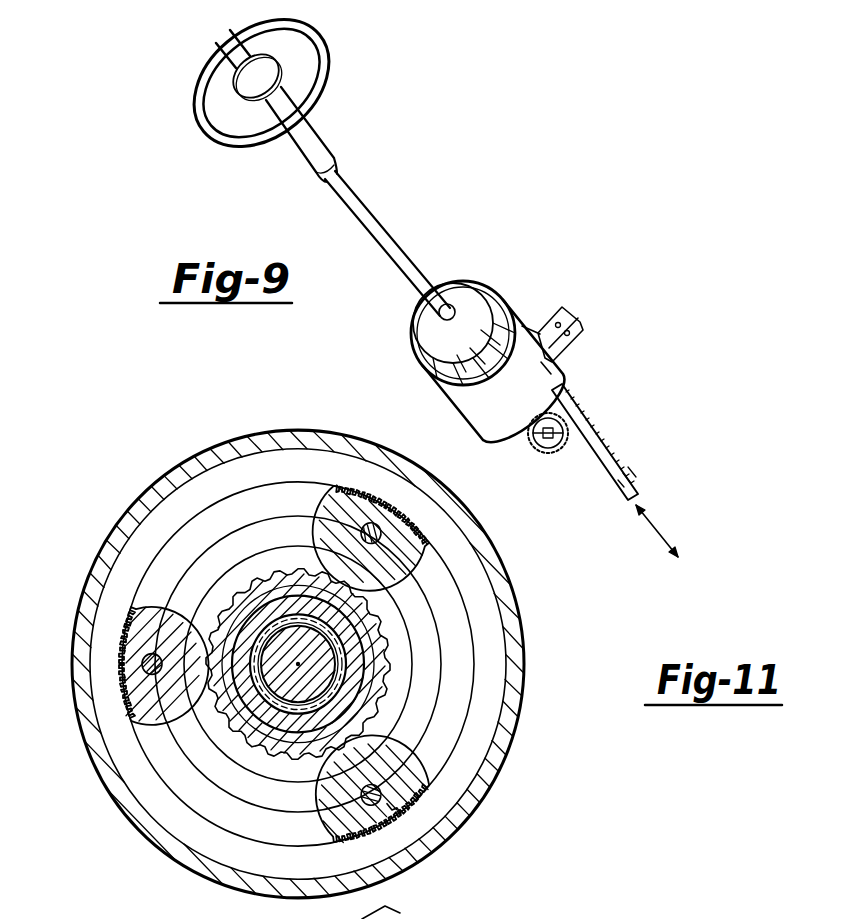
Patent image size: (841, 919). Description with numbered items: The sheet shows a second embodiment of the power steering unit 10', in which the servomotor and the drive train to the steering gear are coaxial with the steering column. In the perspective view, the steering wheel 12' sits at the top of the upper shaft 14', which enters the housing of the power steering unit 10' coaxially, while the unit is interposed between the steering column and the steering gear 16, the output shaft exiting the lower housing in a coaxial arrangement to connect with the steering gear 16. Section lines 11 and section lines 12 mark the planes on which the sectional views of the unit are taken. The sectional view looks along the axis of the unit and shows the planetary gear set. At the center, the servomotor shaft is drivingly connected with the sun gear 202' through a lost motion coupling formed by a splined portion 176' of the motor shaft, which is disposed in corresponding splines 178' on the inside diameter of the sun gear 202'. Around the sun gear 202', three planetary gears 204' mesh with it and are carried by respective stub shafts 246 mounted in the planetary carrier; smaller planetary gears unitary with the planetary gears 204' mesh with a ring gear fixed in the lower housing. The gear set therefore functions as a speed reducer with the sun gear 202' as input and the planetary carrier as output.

In FIG. 9, the power steering unit 10' is at (530, 334).
In FIG. 9, the steering wheel 12' is at (285, 86).
In FIG. 9, the upper shaft 14' is at (358, 201).
In FIG. 9, the steering gear 16 is at (566, 455).
In FIG. 9, the section lines 11— 11 is at (524, 277).
In FIG. 9, the section lines 12— 12 is at (527, 372).
In FIG. 11, the splines 178' is at (291, 664).
In FIG. 11, the planetary gears 204' is at (295, 663).
In FIG. 11, the splined portion 176' is at (412, 664).
In FIG. 11, the sun gear 202' is at (401, 664).
In FIG. 11, the stub shafts 246 is at (400, 800).